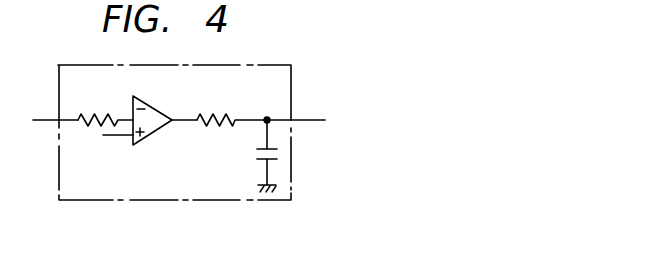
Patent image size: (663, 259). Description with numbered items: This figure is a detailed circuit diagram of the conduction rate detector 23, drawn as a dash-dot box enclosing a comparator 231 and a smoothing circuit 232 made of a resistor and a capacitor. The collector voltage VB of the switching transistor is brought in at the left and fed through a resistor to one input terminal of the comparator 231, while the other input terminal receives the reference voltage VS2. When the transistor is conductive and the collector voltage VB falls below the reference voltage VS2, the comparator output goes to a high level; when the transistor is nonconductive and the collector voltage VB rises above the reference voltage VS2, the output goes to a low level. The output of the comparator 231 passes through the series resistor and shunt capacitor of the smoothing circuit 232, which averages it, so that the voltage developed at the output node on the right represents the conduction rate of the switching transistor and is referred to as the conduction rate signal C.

The conduction rate detector 23 is at (238, 65).
The comparator 231 is at (158, 132).
The smoothing circuit 232 is at (235, 118).
The collector voltage VB is at (42, 118).
The reference voltage VS2 is at (115, 135).
The conduction rate signal C is at (313, 118).